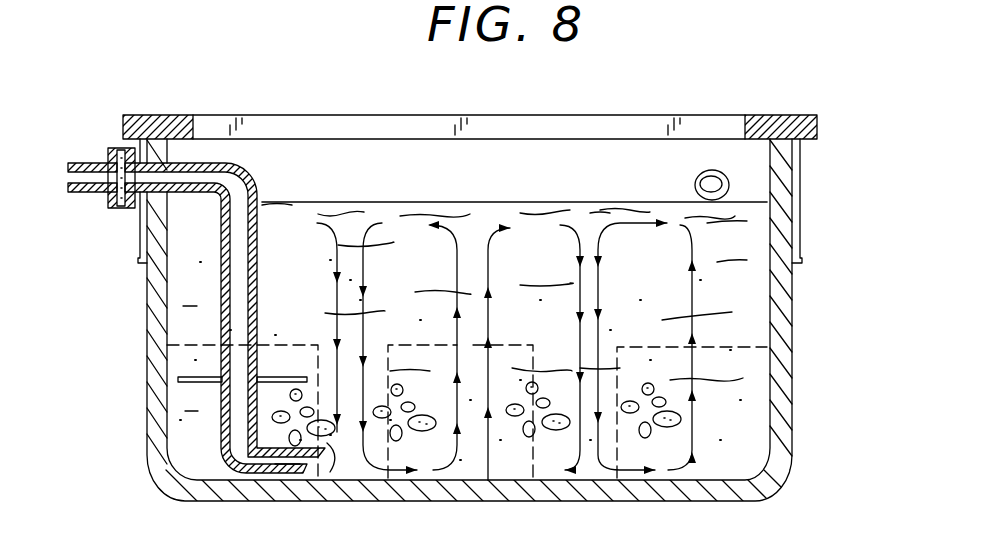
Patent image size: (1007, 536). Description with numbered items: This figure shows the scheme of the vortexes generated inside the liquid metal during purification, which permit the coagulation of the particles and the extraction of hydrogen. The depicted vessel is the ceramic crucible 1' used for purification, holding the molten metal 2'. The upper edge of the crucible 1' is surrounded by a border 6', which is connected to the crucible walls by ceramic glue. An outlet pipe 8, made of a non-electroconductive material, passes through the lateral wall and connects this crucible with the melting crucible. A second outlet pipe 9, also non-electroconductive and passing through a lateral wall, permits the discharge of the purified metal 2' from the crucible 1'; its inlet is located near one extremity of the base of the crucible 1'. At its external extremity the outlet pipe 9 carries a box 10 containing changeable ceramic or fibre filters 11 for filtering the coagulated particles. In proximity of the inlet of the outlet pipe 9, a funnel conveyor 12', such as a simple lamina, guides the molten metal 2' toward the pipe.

The ceramic crucible 1' is at (501, 321).
The molten metal 2' is at (516, 331).
The border 6' is at (496, 189).
The outlet pipe 8 is at (702, 170).
The second outlet pipe 9 is at (230, 328).
The box 10 is at (120, 150).
The filters 11 is at (110, 177).
The funnel conveyor 12' is at (193, 414).